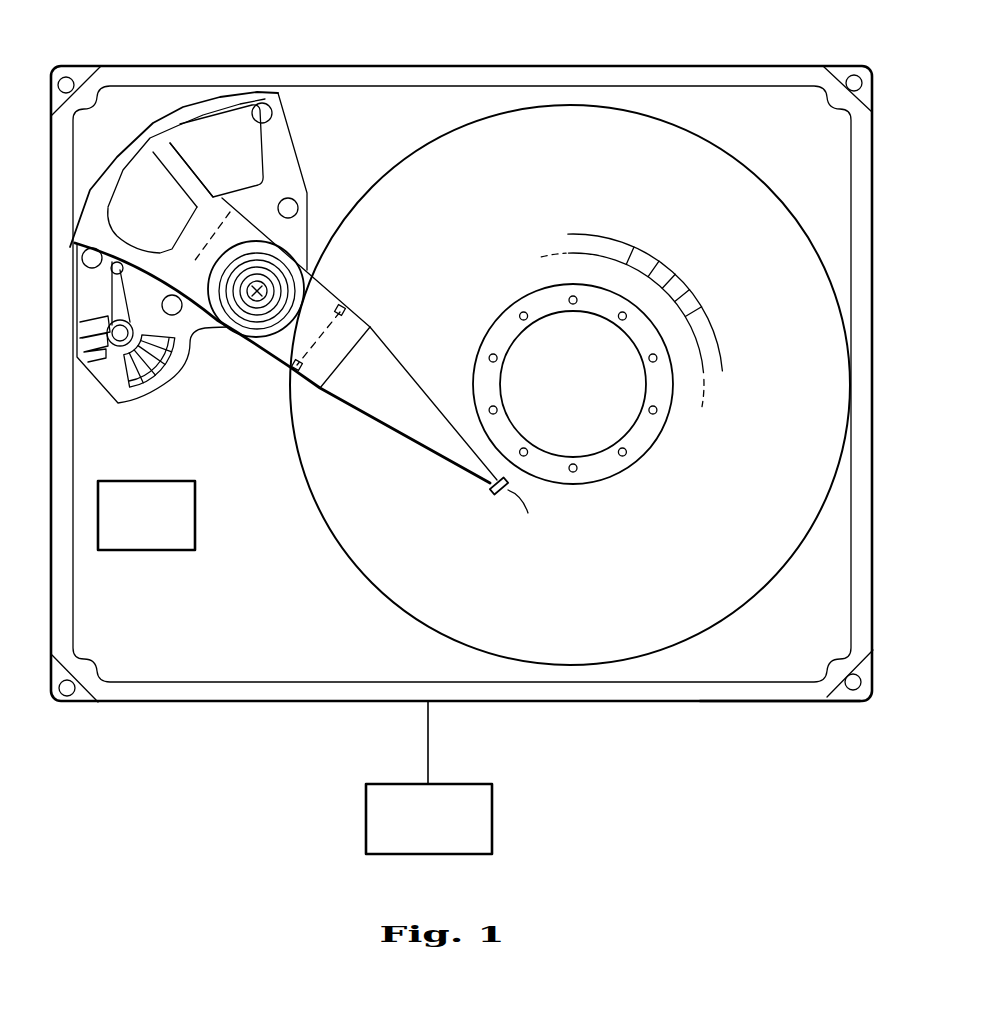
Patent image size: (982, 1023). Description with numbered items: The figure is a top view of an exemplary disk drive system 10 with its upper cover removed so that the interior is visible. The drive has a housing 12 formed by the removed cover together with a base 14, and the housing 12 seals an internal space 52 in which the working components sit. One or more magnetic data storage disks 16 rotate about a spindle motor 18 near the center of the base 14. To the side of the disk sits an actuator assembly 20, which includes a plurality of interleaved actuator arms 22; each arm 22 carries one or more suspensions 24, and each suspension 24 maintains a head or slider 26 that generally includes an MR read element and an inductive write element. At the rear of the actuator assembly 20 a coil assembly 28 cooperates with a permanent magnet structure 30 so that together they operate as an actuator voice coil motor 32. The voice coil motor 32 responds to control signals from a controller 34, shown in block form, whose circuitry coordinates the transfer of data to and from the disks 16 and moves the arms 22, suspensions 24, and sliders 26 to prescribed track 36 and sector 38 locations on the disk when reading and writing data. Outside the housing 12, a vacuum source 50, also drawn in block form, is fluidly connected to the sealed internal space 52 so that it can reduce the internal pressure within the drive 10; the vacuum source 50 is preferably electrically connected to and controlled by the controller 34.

The disk drive system 10 is at (628, 38).
The housing 12 is at (203, 710).
The base 14 is at (298, 690).
The magnetic data storage disk 16 is at (594, 182).
The spindle motor 18 is at (590, 470).
The actuator assembly 20 is at (204, 352).
The actuator arm 22 is at (275, 345).
The suspension 24 is at (358, 395).
The slider 26 is at (504, 498).
The coil assembly 28 is at (123, 167).
The permanent magnet structure 30 is at (275, 144).
The voice coil motor 32 is at (248, 192).
The controller 34 is at (128, 520).
The track 36 is at (714, 373).
The sector 38 is at (690, 302).
The vacuum source 50 is at (492, 821).
The internal space 52 is at (777, 647).